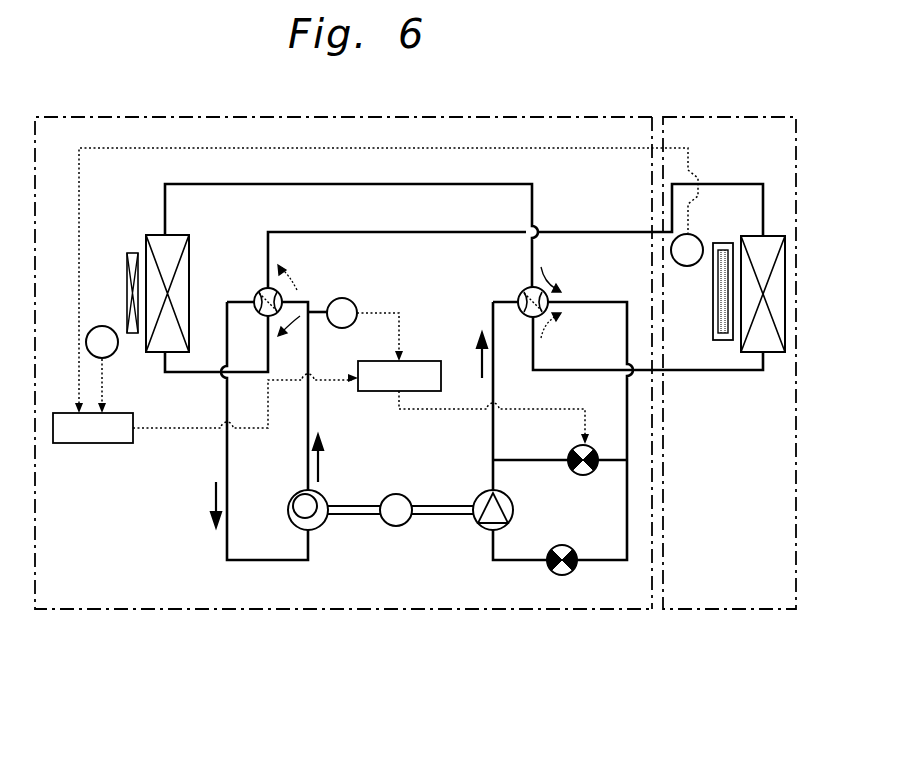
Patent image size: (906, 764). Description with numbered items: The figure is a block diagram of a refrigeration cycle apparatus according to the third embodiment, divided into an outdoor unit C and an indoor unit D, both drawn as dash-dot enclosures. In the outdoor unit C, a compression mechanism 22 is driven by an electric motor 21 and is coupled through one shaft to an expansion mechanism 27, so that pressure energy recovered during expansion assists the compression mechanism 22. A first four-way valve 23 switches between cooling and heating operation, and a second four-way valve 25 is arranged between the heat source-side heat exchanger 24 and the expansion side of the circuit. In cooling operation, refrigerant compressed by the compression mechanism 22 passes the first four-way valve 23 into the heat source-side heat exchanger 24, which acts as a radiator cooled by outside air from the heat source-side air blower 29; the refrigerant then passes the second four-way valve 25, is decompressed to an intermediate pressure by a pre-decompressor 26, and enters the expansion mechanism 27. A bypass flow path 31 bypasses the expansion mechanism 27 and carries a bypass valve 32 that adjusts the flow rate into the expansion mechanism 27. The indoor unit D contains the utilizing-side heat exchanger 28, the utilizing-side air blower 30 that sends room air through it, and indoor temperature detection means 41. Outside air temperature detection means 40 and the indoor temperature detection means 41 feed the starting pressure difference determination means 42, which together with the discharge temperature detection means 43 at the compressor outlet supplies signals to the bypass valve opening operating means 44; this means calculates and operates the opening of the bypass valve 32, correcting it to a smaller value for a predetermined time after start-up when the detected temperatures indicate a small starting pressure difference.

The electric motor 21 is at (397, 527).
The compression mechanism 22 is at (296, 497).
The first four-way valve 23 is at (256, 292).
The heat source-side heat exchanger 24 is at (183, 236).
The second four-way valve 25 is at (522, 292).
The pre-decompressor 26 is at (562, 576).
The expansion mechanism 27 is at (483, 527).
The utilizing-side heat exchanger 28 is at (757, 245).
The heat source-side air blower 29 is at (130, 292).
The utilizing-side air blower 30 is at (713, 300).
The bypass flow path 31 is at (606, 474).
The bypass valve 32 is at (596, 450).
The outside air temperature detection means 40 is at (113, 355).
The indoor temperature detection means 41 is at (670, 250).
The starting pressure difference determination means 42 is at (98, 444).
The discharge temperature detection means 43 is at (352, 302).
The bypass valve opening operating means 44 is at (420, 361).
The outdoor unit C is at (425, 610).
The indoor unit D is at (718, 609).